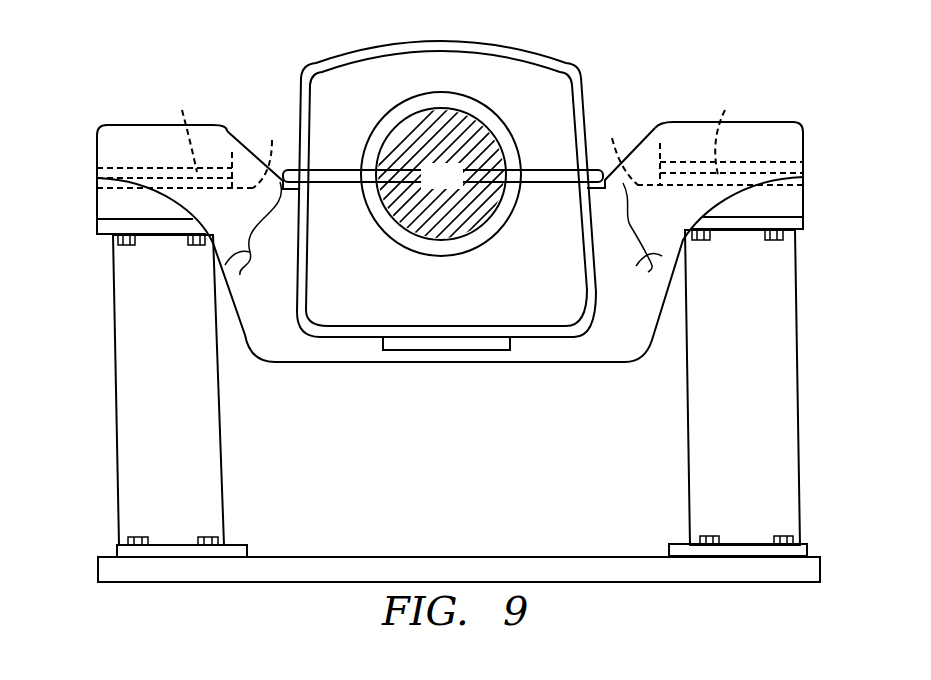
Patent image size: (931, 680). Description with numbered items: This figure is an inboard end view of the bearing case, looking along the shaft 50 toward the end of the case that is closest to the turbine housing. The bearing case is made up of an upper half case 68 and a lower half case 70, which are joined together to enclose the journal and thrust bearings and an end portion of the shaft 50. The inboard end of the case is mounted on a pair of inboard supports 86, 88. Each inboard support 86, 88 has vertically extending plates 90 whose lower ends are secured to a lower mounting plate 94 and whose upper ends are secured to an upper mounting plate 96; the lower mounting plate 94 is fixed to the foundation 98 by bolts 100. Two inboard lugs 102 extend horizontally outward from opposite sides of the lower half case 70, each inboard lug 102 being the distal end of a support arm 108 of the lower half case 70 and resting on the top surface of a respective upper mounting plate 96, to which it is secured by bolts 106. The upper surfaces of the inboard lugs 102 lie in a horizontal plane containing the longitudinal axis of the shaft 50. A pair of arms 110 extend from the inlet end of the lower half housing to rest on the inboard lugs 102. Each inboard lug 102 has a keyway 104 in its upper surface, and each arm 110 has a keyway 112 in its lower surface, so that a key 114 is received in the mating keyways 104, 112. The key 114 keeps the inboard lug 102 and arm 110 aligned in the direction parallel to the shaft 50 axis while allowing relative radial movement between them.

The shaft 50 is at (454, 187).
The upper half case 68 is at (530, 55).
The lower half case 70 is at (322, 315).
The inboard support 86 is at (826, 376).
The inboard support 88 is at (86, 378).
The vertically extending plate 90 is at (170, 397).
The lower mounting plate 94 is at (115, 550).
The upper mounting plate 96 is at (97, 228).
The foundation 98 is at (287, 557).
The bolts 100 is at (200, 537).
The inboard lug 102 is at (97, 200).
The keyway 104 is at (97, 180).
The bolts 106 is at (196, 247).
The support arm 108 is at (445, 152).
The arm 110 is at (240, 258).
The keyway 112 is at (97, 170).
The key 114 is at (460, 131).